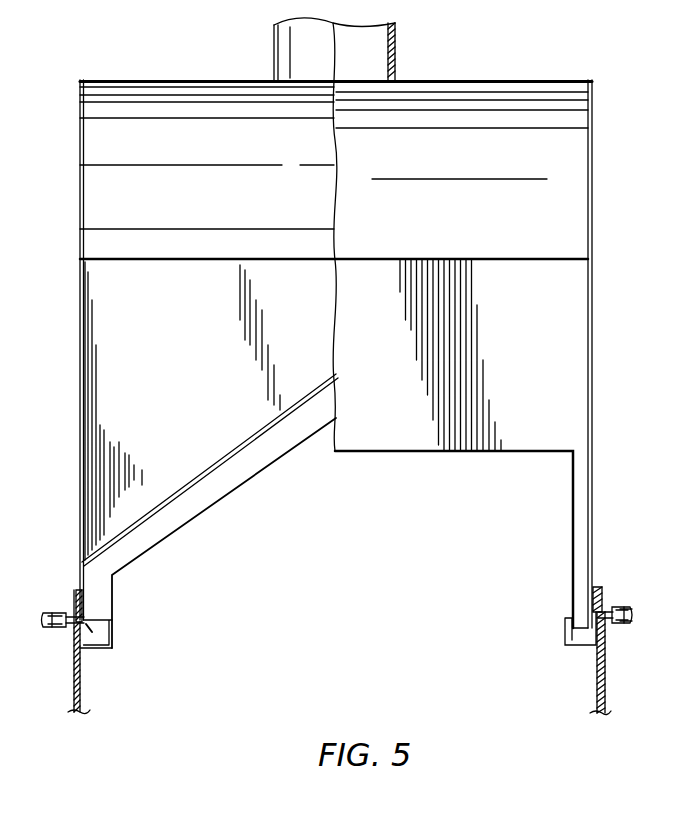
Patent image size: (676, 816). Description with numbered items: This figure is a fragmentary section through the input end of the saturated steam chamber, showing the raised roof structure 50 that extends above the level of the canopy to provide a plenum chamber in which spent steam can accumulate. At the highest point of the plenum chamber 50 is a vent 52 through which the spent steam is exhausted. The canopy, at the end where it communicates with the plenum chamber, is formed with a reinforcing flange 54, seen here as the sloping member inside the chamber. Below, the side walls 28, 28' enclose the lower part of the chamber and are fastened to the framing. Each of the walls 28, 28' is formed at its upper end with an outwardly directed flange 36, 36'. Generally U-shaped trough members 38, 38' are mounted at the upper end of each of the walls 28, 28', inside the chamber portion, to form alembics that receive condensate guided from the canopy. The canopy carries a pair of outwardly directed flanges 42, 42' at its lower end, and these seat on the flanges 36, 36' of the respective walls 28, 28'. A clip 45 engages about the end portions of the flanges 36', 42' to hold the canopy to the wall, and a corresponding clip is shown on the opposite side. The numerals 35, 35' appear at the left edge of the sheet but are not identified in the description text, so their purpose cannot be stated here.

The raised roof structure 50 is at (510, 79).
The vent 52 is at (396, 36).
The reinforcing flange 54 is at (208, 497).
The side wall 28 is at (110, 653).
The side wall 28' is at (566, 665).
The outwardly directed flange 36 is at (51, 651).
The outwardly directed flange 36' is at (631, 638).
The U-shaped trough member 38 is at (128, 632).
The U-shaped trough member 38' is at (553, 640).
The outwardly directed flange 42 is at (55, 583).
The outwardly directed flange 42' is at (632, 583).
The clip 45 is at (634, 617).
The bolt head 35 is at (22, 627).
The bolt head 35' is at (8, 231).